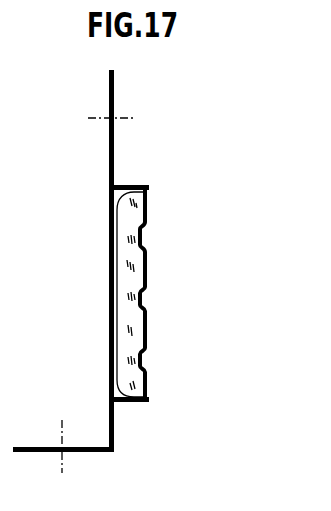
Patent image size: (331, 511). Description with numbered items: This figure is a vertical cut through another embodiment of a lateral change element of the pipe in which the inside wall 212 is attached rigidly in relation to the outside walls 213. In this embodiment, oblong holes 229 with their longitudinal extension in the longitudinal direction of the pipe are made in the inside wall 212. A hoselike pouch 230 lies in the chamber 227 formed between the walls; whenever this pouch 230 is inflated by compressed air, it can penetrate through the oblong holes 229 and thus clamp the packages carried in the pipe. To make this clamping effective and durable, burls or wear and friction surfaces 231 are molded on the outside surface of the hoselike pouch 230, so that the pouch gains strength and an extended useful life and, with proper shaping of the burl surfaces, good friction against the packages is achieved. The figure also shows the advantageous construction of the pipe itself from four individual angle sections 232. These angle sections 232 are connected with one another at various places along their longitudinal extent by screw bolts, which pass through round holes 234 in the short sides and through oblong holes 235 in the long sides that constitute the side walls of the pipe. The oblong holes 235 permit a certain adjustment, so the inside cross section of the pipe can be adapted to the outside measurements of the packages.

The inside wall 212 is at (148, 325).
The outside walls 213 is at (108, 158).
The chamber 227 is at (149, 185).
The oblong holes 229 is at (151, 229).
The hoselike pouch 230 is at (121, 240).
The burls or wear and friction surfaces 231 is at (143, 239).
The angle sections 232 is at (116, 430).
The round holes 234 is at (61, 450).
The oblong holes 235 is at (112, 112).